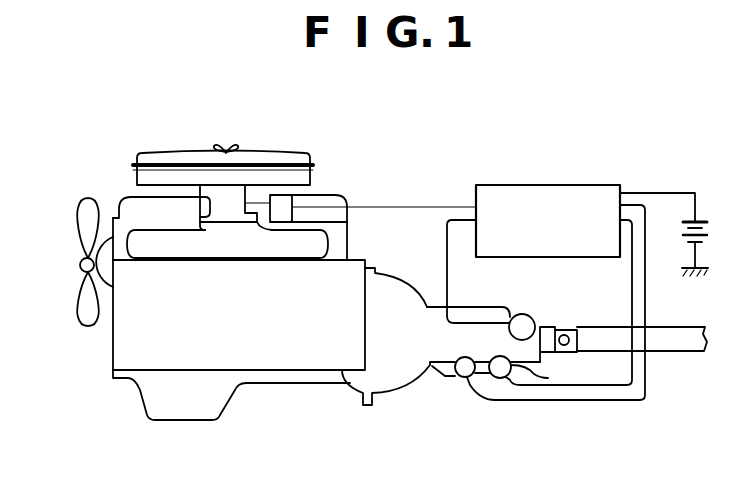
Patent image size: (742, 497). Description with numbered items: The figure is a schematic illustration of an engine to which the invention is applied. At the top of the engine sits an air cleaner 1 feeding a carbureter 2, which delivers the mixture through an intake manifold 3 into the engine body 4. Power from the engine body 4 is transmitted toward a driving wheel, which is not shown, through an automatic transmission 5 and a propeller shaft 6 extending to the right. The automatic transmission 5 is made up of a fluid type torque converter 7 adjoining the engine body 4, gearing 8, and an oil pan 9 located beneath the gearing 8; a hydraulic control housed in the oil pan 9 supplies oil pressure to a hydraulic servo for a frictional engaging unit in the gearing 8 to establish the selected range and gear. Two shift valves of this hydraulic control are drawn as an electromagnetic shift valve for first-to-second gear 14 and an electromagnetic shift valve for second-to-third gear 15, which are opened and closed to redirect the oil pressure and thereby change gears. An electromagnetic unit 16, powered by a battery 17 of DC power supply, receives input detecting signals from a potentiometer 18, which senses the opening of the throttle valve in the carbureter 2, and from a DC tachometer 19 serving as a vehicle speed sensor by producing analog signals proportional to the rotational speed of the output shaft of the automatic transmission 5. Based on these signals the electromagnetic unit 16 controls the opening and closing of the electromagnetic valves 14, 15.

The air cleaner 1 is at (187, 152).
The carbureter 2 is at (227, 200).
The intake manifold 3 is at (247, 232).
The engine body 4 is at (140, 357).
The automatic transmission 5 is at (427, 379).
The propeller shaft 6 is at (653, 325).
The fluid type torque converter 7 is at (400, 312).
The gearing 8 is at (462, 306).
The oil pan 9 is at (548, 377).
The electromagnetic shift valve for 1st-2nd gear 14 is at (458, 359).
The electromagnetic shift valve for 2nd-3rd gear 15 is at (500, 358).
The electromagnetic unit 16 is at (557, 185).
The battery 17 is at (697, 220).
The potentiometer 18 is at (280, 206).
The DC tachometer 19 is at (528, 318).